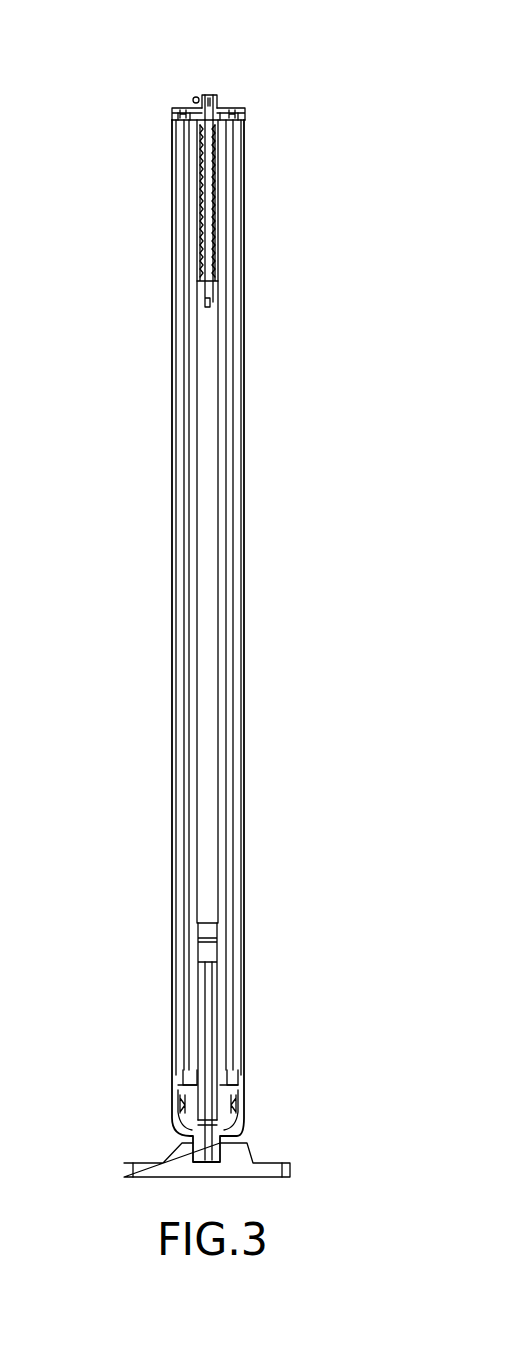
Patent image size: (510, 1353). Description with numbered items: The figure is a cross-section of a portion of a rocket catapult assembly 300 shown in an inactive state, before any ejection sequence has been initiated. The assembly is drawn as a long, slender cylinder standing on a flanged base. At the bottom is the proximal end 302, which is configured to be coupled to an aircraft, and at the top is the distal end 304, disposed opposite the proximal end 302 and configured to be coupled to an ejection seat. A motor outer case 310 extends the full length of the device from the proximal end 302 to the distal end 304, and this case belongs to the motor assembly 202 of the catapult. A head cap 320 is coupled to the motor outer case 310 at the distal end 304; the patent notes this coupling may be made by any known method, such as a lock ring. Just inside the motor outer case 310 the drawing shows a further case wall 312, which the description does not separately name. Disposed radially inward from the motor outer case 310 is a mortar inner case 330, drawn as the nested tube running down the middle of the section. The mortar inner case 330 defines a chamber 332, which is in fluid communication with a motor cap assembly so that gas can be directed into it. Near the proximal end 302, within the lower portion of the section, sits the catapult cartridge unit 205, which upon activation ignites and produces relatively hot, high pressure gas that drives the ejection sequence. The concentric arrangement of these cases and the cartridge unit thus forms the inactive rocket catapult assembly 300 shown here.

The rocket catapult assembly 300 is at (280, 83).
The head cap 320 is at (183, 128).
The distal end 304 is at (190, 138).
The inner housing 312 is at (182, 185).
The motor outer case 310 is at (173, 212).
The motor assembly 202 is at (173, 287).
The mortar inner case 330 is at (193, 352).
The chamber 332 is at (207, 415).
The catapult cartridge unit 205 is at (207, 1055).
The proximal end 302 is at (253, 1158).